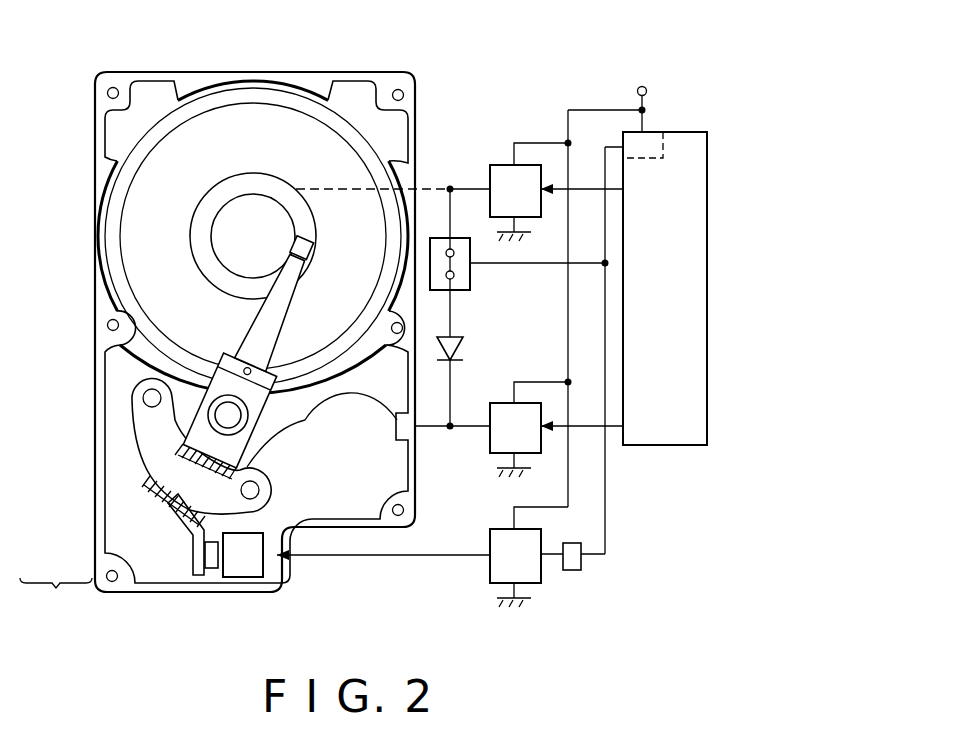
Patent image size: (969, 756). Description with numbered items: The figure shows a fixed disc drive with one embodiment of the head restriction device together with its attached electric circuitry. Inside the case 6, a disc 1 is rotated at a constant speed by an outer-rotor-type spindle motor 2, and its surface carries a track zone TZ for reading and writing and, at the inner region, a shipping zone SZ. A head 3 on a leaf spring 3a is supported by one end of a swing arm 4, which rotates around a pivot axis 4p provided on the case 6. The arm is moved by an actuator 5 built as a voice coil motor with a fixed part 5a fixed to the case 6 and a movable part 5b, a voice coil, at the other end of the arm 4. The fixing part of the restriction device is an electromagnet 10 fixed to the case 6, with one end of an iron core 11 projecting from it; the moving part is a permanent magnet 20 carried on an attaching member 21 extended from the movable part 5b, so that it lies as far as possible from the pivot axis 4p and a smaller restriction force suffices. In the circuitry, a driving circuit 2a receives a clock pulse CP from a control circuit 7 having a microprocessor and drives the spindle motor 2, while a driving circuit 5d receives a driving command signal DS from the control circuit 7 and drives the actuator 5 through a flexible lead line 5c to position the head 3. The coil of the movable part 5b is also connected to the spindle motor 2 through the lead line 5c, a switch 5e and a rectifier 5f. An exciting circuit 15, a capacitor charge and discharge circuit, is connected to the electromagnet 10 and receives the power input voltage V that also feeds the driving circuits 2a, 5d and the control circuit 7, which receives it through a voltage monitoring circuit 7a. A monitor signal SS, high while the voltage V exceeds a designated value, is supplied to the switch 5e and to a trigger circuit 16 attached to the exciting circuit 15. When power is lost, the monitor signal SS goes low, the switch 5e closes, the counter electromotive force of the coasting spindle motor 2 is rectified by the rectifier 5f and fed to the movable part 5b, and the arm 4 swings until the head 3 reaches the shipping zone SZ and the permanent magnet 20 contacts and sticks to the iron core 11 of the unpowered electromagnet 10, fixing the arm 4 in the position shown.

The disc 1 is at (112, 155).
The spindle motor 2 is at (227, 233).
The driving circuit 2a is at (490, 170).
The head 3 is at (310, 240).
The leaf spring 3a is at (284, 327).
The swing arm 4 is at (183, 425).
The pivot axis 4p is at (240, 417).
The actuator 5 is at (56, 594).
The fixed part 5a is at (150, 455).
The movable part 5b is at (170, 487).
The flexible lead line 5c is at (305, 428).
The driving circuit 5d is at (490, 440).
The switch 5e is at (474, 288).
The rectifier 5f is at (488, 366).
The case 6 is at (384, 82).
The control circuit 7 is at (686, 446).
The voltage monitoring circuit 7a is at (665, 146).
The electromagnet 10 is at (265, 575).
The iron core 11 is at (225, 556).
The exciting circuit 15 is at (490, 567).
The trigger circuit 16 is at (582, 568).
The permanent magnet 20 is at (205, 575).
The attaching member 21 is at (205, 553).
The track zone TZ is at (193, 127).
The shipping zone SZ is at (240, 195).
The voltage V is at (647, 85).
The monitor signal SS is at (606, 148).
The clock pulse CP is at (594, 193).
The driving command signal DS is at (599, 420).